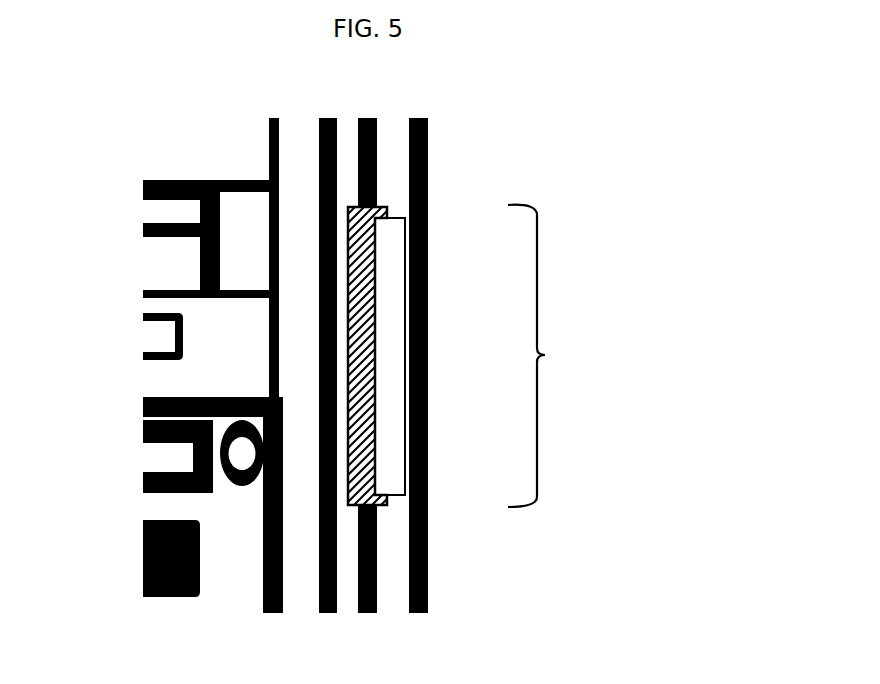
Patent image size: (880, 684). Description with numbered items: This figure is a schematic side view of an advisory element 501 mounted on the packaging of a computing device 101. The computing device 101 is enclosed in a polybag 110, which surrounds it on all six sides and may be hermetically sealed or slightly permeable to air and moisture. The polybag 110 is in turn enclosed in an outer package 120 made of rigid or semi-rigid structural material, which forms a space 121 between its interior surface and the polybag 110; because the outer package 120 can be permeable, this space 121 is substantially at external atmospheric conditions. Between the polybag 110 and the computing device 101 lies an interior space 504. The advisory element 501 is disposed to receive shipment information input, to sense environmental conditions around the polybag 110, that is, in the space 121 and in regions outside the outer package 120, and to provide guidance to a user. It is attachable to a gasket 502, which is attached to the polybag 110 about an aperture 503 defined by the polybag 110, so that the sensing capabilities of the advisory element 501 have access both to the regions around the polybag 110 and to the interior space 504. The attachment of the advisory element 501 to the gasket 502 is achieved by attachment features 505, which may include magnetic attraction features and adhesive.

The computing device 101 is at (193, 180).
The polybag 110 is at (357, 116).
The outer package 120 is at (427, 120).
The space 121 is at (393, 546).
The advisory element 501 is at (385, 306).
The gasket 502 is at (387, 505).
The aperture 503 is at (363, 356).
The interior space 504 is at (340, 578).
The attachment features 505 is at (377, 394).